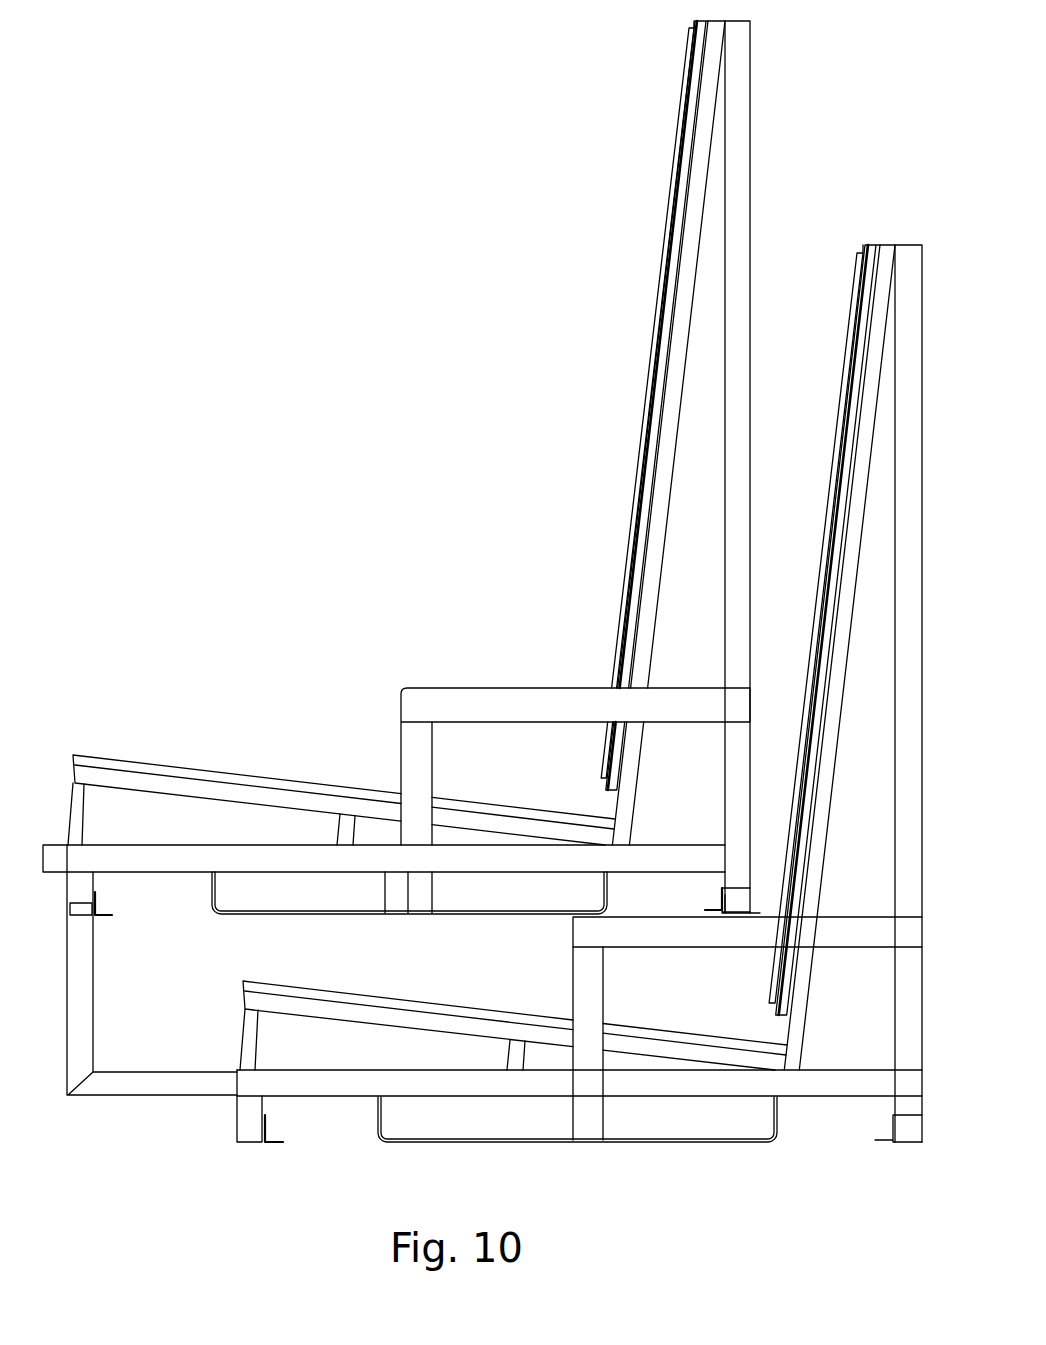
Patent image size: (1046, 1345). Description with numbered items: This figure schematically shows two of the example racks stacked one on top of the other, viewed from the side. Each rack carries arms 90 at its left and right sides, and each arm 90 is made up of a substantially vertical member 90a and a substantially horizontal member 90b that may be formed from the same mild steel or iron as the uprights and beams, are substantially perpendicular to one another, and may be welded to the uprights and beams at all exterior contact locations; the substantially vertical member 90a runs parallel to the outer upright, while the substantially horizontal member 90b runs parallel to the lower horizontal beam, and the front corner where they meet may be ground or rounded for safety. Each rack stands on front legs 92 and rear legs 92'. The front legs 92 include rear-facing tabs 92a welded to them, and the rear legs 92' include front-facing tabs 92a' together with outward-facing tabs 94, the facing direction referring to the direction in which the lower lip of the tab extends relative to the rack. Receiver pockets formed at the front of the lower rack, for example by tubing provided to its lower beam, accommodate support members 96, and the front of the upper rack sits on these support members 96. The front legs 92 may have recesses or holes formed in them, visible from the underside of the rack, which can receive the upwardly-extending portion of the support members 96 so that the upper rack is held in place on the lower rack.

The arm 90 is at (466, 701).
The substantially vertical member 90a is at (573, 990).
The substantially horizontal member 90b is at (683, 930).
The front leg 92 is at (120, 895).
The rear-facing tab 92a is at (137, 949).
The rear leg 92' is at (798, 867).
The front-facing tab 92a' is at (714, 954).
The outward-facing tab 94 is at (741, 917).
The support member 96 is at (133, 1085).